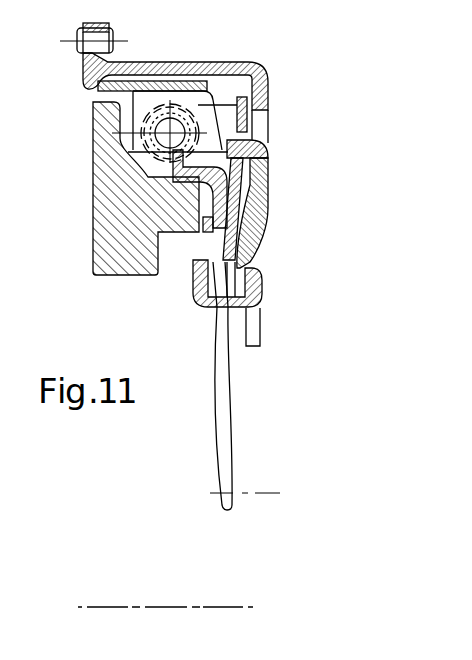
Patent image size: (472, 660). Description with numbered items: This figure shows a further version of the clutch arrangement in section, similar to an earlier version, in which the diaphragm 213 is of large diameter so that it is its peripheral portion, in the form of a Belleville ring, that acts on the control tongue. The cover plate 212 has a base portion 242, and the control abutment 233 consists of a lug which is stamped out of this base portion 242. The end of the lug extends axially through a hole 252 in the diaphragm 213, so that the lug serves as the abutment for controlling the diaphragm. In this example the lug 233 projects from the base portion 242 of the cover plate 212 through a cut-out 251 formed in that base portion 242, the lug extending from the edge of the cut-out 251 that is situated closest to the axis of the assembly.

The cover plate 212 is at (265, 62).
The cut-out 251 is at (267, 115).
The control abutment 233 is at (255, 143).
The hole 252 is at (270, 167).
The base portion 242 is at (273, 197).
The diaphragm 213 is at (242, 237).